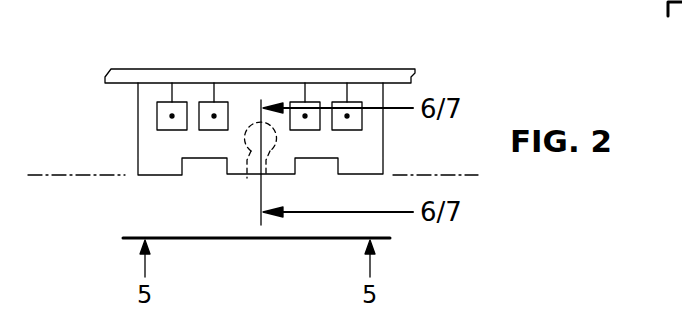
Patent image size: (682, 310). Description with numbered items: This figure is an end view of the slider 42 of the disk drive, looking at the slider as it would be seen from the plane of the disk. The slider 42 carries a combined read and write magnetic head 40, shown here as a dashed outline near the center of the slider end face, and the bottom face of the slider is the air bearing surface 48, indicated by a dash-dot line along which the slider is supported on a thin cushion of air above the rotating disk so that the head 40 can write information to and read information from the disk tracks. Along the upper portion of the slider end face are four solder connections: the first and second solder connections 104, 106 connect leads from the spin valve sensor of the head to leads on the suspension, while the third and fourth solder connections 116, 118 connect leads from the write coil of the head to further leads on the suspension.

The slider 42 is at (138, 117).
The first solder connection 104 is at (155, 105).
The third solder connection 116 is at (200, 105).
The fourth solder connection 118 is at (292, 103).
The second solder connection 106 is at (335, 103).
The magnetic head 40 is at (241, 176).
The air bearing surface 48 is at (55, 177).